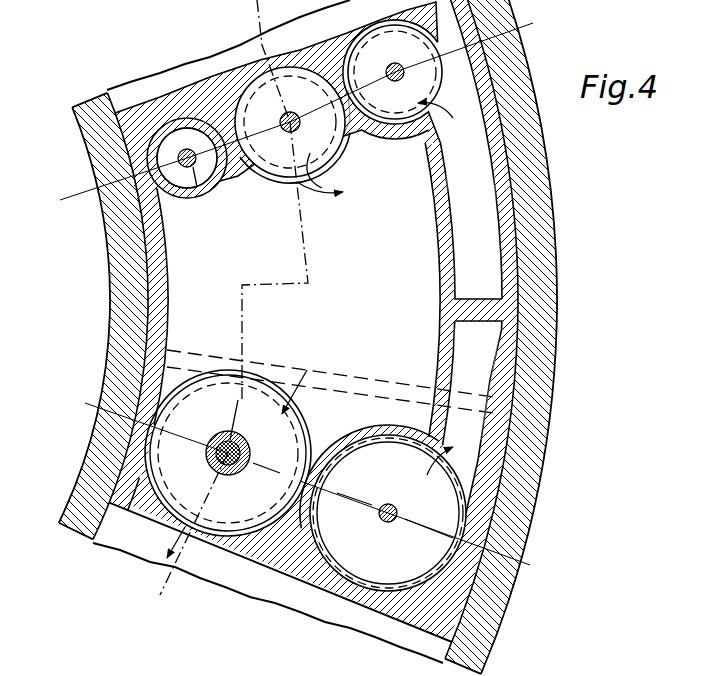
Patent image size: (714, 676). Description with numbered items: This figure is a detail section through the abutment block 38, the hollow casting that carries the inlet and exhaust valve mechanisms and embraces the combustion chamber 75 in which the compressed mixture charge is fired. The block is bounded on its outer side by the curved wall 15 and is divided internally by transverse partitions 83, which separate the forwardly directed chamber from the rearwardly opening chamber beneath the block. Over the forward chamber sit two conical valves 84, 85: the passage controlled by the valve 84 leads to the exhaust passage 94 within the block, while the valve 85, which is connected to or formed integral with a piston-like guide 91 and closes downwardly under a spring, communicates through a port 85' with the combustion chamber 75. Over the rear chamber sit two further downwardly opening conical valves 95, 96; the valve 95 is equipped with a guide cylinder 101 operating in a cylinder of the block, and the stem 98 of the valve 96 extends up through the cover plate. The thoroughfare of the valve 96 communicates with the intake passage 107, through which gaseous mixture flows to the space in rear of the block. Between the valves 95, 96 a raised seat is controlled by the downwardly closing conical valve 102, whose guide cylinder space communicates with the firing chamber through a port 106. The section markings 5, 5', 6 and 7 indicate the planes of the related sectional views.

The outer ring 15 is at (557, 354).
The abutment block 38 is at (495, 260).
The combustion chamber 75 is at (305, 261).
The transverse partitions 83 is at (140, 240).
The conical valve 84 is at (463, 492).
The conical valve 85 is at (169, 464).
The port 85' is at (233, 431).
The piston-like guide 91 is at (405, 66).
The exhaust passage 94 is at (481, 430).
The conical valve 95 is at (161, 112).
The conical valve 96 is at (367, 60).
The stem 98 is at (191, 202).
The guide cylinder 101 is at (160, 124).
The conical valve 102 is at (290, 168).
The port 106 is at (352, 181).
The intake passage 107 is at (476, 168).
The section line 5- 5 is at (434, 529).
The section line 5' is at (145, 423).
The section line 6- 6 is at (185, 601).
The section line 7- 7 is at (78, 185).